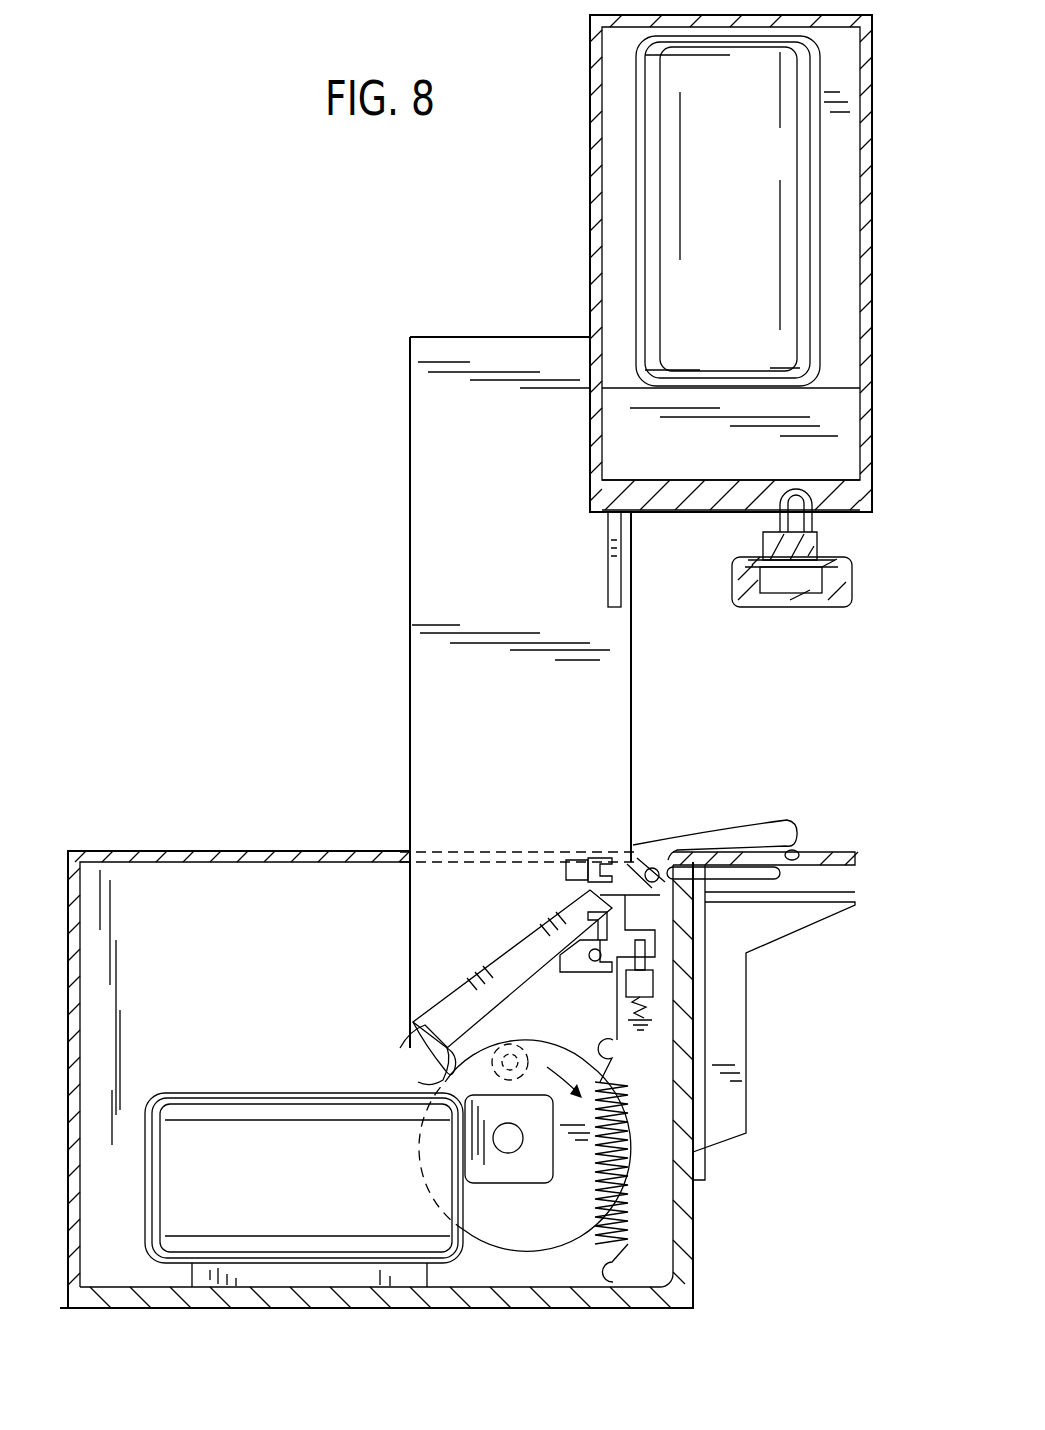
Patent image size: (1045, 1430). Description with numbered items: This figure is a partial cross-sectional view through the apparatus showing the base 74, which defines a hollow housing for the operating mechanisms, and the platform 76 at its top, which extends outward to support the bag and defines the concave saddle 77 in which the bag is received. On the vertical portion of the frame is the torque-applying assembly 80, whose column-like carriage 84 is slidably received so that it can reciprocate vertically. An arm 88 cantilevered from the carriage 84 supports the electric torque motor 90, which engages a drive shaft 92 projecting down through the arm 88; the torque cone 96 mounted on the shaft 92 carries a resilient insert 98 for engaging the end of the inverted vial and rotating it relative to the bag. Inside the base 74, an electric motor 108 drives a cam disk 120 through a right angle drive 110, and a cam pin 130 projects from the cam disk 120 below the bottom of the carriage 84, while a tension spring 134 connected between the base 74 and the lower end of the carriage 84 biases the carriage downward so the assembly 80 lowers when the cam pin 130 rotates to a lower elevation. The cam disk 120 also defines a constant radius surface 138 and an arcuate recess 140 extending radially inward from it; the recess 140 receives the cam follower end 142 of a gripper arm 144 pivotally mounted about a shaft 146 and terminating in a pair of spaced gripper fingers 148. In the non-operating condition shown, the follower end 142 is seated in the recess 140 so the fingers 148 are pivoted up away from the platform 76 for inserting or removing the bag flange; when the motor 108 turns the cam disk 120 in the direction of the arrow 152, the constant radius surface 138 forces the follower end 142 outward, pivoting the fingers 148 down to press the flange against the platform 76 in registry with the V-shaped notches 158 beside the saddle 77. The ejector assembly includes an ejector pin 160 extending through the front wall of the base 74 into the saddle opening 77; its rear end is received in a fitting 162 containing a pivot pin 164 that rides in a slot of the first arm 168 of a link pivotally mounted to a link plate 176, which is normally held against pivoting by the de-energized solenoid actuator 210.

The base 74 is at (682, 1287).
The platform 76 is at (797, 842).
The saddle 77 is at (826, 852).
The torque-applying assembly 80 is at (640, 641).
The carriage 84 is at (598, 705).
The arm 88 is at (625, 499).
The torque motor 90 is at (800, 226).
The drive shaft 92 is at (800, 522).
The torque cone 96 is at (745, 567).
The resilient insert 98 is at (804, 607).
The electric motor 108 is at (205, 1082).
The right angle drive 110 is at (496, 1192).
The cam disk 120 is at (527, 1245).
The cam pin 130 is at (548, 1048).
The tension spring 134 is at (632, 1230).
The constant radius surface 138 is at (558, 1228).
The arcuate recess 140 is at (408, 1048).
The cam follower end 142 is at (435, 1050).
The gripper arm 144 is at (486, 950).
The shaft 146 is at (634, 860).
The gripper fingers 148 is at (748, 833).
The arrow 152 is at (600, 1080).
The V-shaped notch 158 is at (786, 872).
The ejector pin 160 is at (770, 880).
The fitting 162 is at (580, 862).
The pivot pin 164 is at (598, 860).
The first arm 168 is at (560, 913).
The link plate 176 is at (650, 924).
The solenoid actuator 210 is at (662, 986).